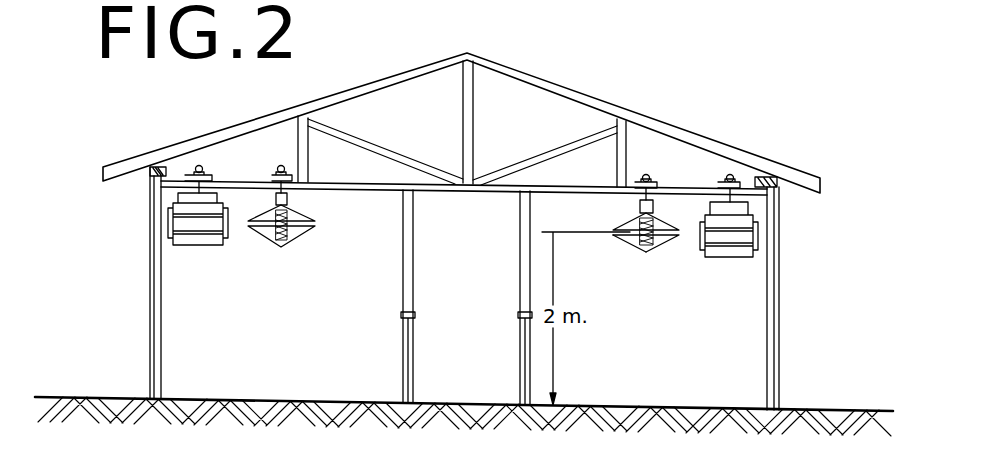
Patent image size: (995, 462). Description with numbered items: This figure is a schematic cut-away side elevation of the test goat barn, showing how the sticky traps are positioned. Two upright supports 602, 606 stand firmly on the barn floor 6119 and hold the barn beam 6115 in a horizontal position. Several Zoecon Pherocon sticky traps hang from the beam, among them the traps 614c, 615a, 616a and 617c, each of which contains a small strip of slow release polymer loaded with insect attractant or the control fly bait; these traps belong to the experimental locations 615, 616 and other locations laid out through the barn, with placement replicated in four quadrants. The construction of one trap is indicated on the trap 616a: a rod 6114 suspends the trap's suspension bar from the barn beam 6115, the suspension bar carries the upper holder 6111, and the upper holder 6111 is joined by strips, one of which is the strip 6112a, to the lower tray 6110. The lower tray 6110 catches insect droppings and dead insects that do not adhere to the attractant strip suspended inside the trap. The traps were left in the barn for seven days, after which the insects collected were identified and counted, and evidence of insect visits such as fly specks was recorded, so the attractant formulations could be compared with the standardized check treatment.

The upright support 602 is at (148, 303).
The experimental location 615 is at (180, 365).
The upright support 606 is at (778, 357).
The experimental location 616 is at (740, 393).
The barn beam 6115 is at (470, 197).
The barn floor 6119 is at (458, 403).
The sticky trap 614c is at (172, 241).
The sticky trap 615a is at (283, 252).
The lower tray 6110 is at (660, 243).
The rod 6114 is at (657, 190).
The upper holder 6111 is at (630, 221).
The strip 6112a is at (647, 253).
The sticky trap 616a is at (634, 257).
The sticky trap 617c is at (744, 259).